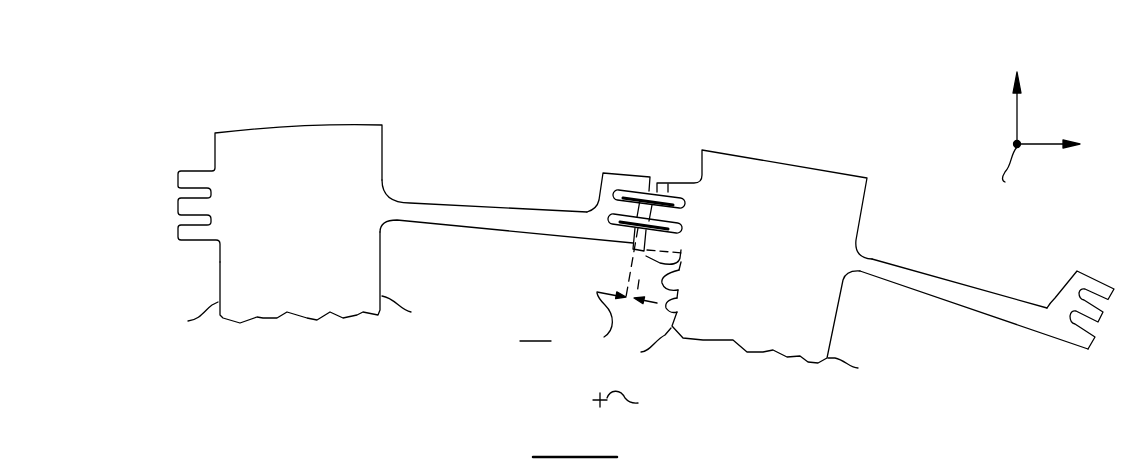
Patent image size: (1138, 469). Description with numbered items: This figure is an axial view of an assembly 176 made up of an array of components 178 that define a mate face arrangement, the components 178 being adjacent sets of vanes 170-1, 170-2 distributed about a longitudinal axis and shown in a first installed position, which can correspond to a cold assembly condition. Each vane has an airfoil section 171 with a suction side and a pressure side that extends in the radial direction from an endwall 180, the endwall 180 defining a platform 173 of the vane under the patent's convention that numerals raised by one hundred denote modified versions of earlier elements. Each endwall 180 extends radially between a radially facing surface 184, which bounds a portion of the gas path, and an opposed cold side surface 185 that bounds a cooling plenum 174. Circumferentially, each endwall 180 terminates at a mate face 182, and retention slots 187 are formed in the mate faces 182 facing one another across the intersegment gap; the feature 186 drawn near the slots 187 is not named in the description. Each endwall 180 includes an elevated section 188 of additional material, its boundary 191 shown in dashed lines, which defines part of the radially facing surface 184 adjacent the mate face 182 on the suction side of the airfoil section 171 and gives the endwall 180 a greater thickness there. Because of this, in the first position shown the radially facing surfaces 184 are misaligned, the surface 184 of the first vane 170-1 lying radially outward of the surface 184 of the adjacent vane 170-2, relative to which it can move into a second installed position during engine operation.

The assembly 176 is at (226, 78).
The first vane 170-1 is at (351, 172).
The adjacent vane 170-2 is at (714, 140).
The components 178 is at (214, 124).
The airfoil section 171 is at (233, 267).
The outer platform 173 is at (734, 239).
The endwall 180 is at (417, 207).
The cooling plenum 174 is at (572, 123).
The radially facing surface 184 is at (443, 225).
The cold side surface 185 is at (458, 201).
The seal stem 186 is at (634, 202).
The retention slot 187 is at (612, 218).
The mate face 182 is at (636, 252).
The boundary 191 is at (681, 262).
The elevated section 188 is at (675, 283).